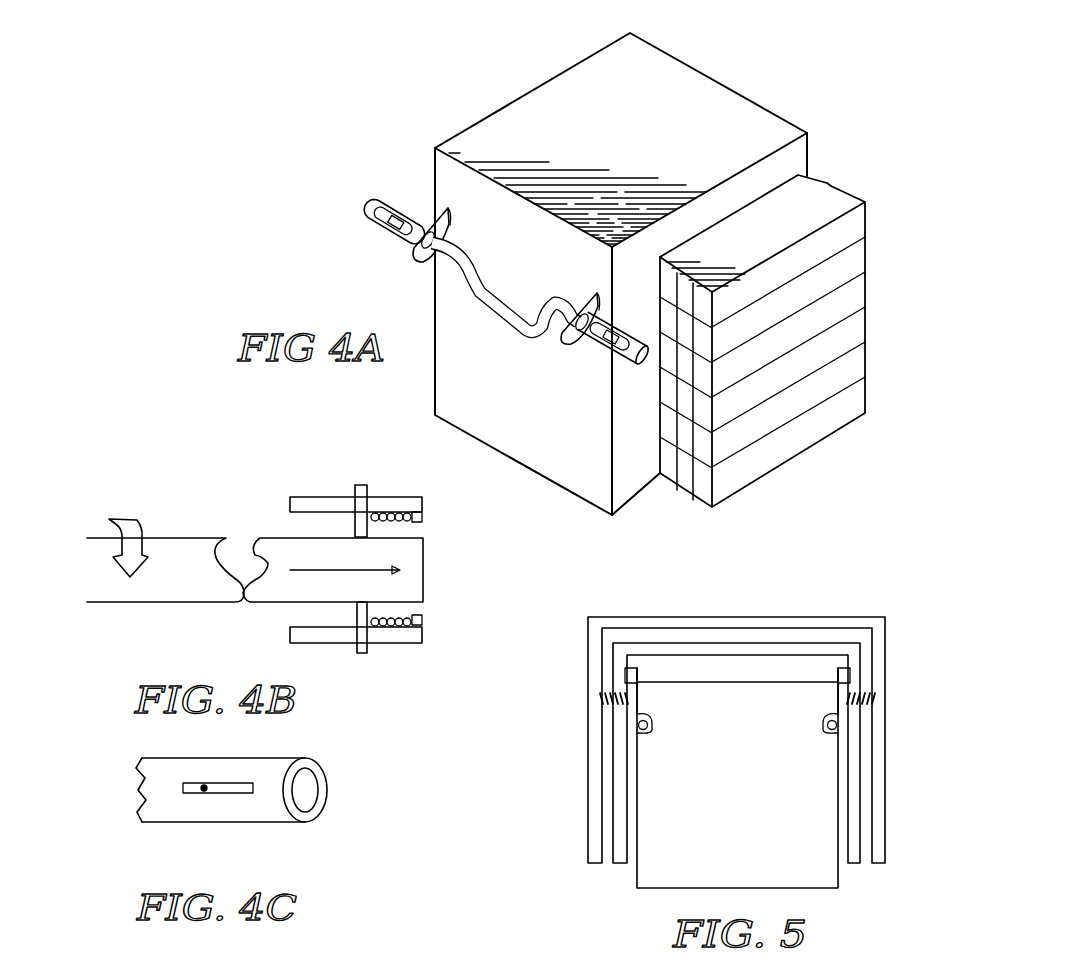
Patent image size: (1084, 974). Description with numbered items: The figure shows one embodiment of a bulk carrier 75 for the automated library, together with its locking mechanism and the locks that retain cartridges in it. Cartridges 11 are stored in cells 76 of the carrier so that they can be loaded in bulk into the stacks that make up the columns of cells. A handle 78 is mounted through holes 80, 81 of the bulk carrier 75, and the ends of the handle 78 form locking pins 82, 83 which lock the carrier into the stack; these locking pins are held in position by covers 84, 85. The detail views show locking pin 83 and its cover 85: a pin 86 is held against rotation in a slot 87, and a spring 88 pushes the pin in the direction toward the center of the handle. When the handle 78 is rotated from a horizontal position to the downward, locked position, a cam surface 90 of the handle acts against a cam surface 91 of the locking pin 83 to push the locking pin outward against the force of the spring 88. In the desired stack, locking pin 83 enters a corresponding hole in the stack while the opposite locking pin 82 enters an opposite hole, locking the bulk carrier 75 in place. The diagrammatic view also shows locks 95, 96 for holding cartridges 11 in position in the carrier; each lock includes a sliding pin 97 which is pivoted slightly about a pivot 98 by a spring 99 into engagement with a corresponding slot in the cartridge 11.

In FIG. 4A, the bulk carrier 75 is at (662, 51).
In FIG. 5, the bulk carrier 75 is at (885, 651).
In FIG. 4A, the cell 76 is at (722, 208).
In FIG. 5, the cell 76 is at (862, 780).
In FIG. 4A, the cartridge 11 is at (868, 256).
In FIG. 5, the cartridge 11 is at (822, 888).
In FIG. 4A, the cover 84 is at (367, 200).
In FIG. 4A, the locking pin 82 is at (376, 226).
In FIG. 4A, the hole 80 is at (418, 262).
In FIG. 4A, the handle 78 is at (497, 323).
In FIG. 4A, the cover 85 is at (627, 318).
In FIG. 4B, the cover 85 is at (412, 644).
In FIG. 4C, the cover 85 is at (282, 822).
In FIG. 4A, the hole 81 is at (584, 338).
In FIG. 4A, the locking pin 83 is at (610, 363).
In FIG. 4B, the locking pin 83 is at (281, 603).
In FIG. 4B, the cam surface of the locking pin 91 is at (253, 567).
In FIG. 4B, the cam surface of the handle 90 is at (240, 572).
In FIG. 4B, the spring 88 is at (398, 518).
In FIG. 4B, the pin 86 is at (371, 648).
In FIG. 4C, the pin 86 is at (204, 794).
In FIG. 4C, the slot 87 is at (227, 794).
In FIG. 5, the pivot 98 is at (643, 663).
In FIG. 5, the spring 99 is at (602, 699).
In FIG. 5, the lock 95 is at (645, 688).
In FIG. 5, the lock 96 is at (829, 688).
In FIG. 5, the sliding pin 97 is at (640, 727).